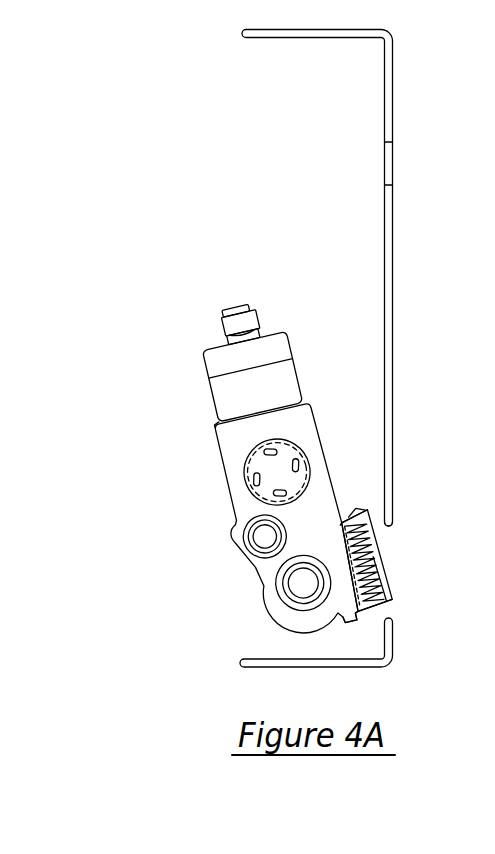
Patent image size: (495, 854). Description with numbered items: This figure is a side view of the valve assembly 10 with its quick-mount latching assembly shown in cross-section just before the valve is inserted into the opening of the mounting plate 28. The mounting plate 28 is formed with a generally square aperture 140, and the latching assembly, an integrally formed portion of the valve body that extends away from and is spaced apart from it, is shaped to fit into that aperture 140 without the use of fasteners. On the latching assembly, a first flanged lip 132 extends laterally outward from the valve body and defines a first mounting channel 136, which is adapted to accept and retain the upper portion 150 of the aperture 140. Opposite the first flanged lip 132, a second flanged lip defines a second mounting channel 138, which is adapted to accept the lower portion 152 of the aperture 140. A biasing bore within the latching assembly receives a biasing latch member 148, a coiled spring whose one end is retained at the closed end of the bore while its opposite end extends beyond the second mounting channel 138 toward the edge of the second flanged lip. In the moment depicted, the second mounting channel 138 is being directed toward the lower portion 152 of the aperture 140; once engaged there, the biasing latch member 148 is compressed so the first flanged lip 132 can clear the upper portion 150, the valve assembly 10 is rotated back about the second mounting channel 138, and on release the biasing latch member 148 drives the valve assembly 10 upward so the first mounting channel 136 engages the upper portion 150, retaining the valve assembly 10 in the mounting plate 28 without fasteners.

The valve assembly 10 is at (306, 356).
The mounting plate 28 is at (393, 340).
The first flanged lip 132 is at (358, 509).
The first mounting channel 136 is at (340, 516).
The second mounting channel 138 is at (367, 623).
The aperture 140 is at (385, 546).
The biasing latch member 148 is at (381, 566).
The upper portion 150 is at (390, 527).
The lower portion 152 is at (388, 611).